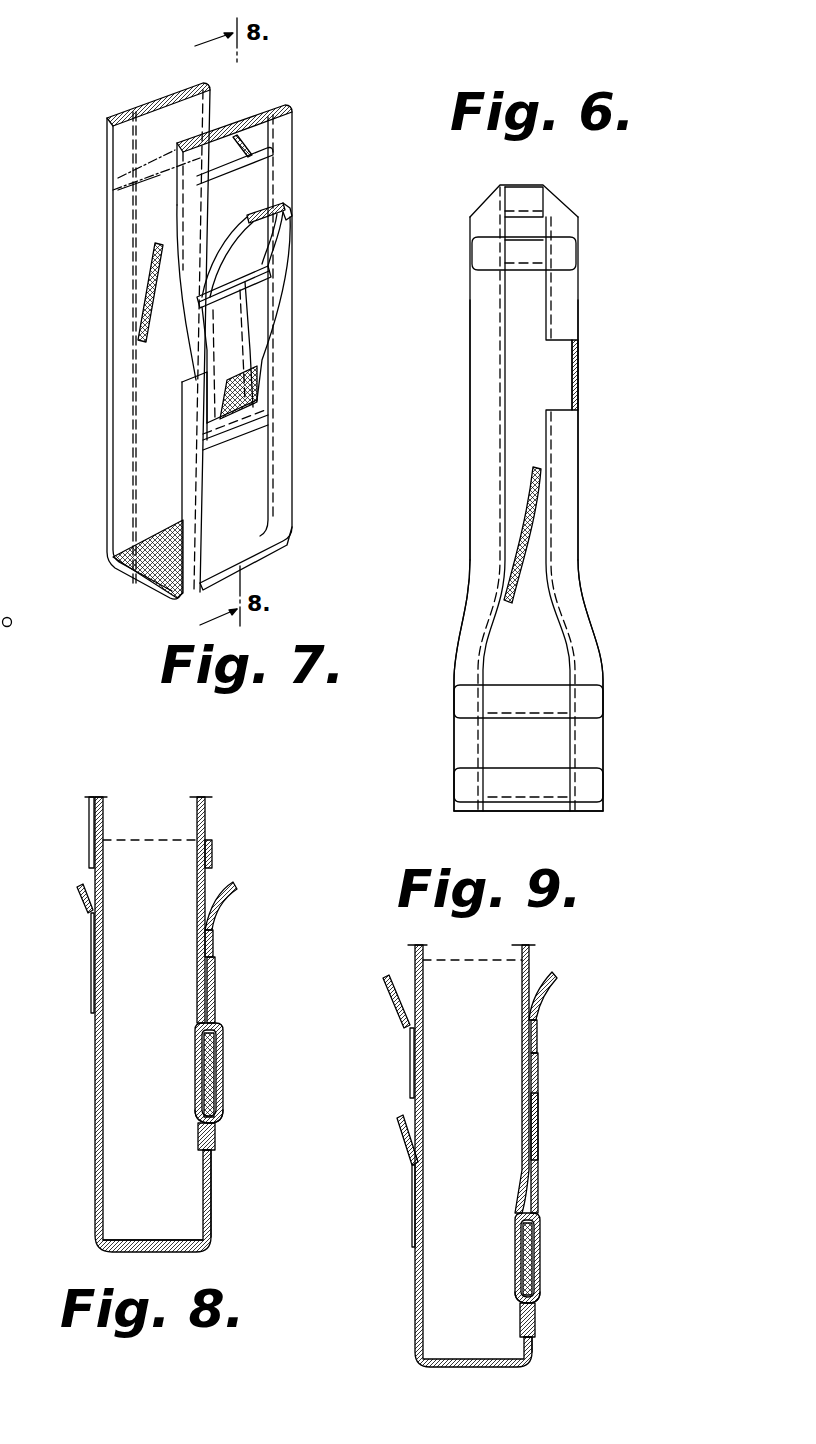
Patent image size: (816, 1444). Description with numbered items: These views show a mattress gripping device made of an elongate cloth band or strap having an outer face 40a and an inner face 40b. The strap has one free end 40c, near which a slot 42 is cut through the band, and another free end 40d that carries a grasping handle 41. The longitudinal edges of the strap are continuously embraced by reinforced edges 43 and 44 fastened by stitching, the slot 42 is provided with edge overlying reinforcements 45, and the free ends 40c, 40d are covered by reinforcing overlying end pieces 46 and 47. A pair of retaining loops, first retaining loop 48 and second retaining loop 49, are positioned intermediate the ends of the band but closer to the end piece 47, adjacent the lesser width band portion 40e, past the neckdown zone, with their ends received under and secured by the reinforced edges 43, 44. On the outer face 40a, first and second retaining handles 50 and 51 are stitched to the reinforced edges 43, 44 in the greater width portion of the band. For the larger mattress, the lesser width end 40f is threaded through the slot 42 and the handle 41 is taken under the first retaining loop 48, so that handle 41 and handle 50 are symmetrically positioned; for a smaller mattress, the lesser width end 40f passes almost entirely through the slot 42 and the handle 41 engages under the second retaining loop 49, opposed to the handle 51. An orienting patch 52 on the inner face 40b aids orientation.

In FIG. 7, the outer face 40a is at (262, 472).
In FIG. 6, the outer face 40a is at (532, 452).
In FIG. 8, the outer face 40a is at (250, 804).
In FIG. 9, the outer face 40a is at (523, 1148).
In FIG. 7, the inner face 40b is at (150, 388).
In FIG. 8, the inner face 40b is at (137, 1053).
In FIG. 9, the inner face 40b is at (436, 1139).
In FIG. 9, the free end 40c is at (538, 1234).
In FIG. 6, the free end 40d is at (538, 240).
In FIG. 7, the lesser width band portion 40e is at (196, 366).
In FIG. 6, the lesser width band portion 40e is at (462, 598).
In FIG. 7, the lesser width end 40f is at (237, 328).
In FIG. 6, the lesser width end 40f is at (470, 355).
In FIG. 8, the lesser width end 40f is at (214, 985).
In FIG. 9, the lesser width end 40f is at (538, 1080).
In FIG. 7, the grasping handle 41 is at (288, 216).
In FIG. 6, the grasping handle 41 is at (522, 192).
In FIG. 8, the grasping handle 41 is at (236, 888).
In FIG. 9, the grasping handle 41 is at (550, 985).
In FIG. 8, the slot 42 is at (200, 1120).
In FIG. 9, the slot 42 is at (520, 1302).
In FIG. 6, the reinforced edge 43 is at (473, 456).
In FIG. 6, the reinforced edge 44 is at (576, 547).
In FIG. 8, the edge overlying reinforcements 45 is at (216, 1130).
In FIG. 9, the edge overlying reinforcements 45 is at (538, 1290).
In FIG. 8, the reinforcing overlying end piece 46 is at (222, 1048).
In FIG. 9, the reinforcing overlying end piece 46 is at (533, 1214).
In FIG. 6, the reinforcing overlying end piece 47 is at (528, 258).
In FIG. 7, the first retaining loop 48 is at (258, 289).
In FIG. 6, the first retaining loop 48 is at (535, 698).
In FIG. 8, the first retaining loop 48 is at (215, 943).
In FIG. 9, the first retaining loop 48 is at (539, 1127).
In FIG. 7, the second retaining loop 49 is at (230, 186).
In FIG. 6, the second retaining loop 49 is at (535, 782).
In FIG. 8, the second retaining loop 49 is at (212, 858).
In FIG. 9, the second retaining loop 49 is at (540, 1045).
In FIG. 7, the first retaining handle 50 is at (157, 152).
In FIG. 8, the first retaining handle 50 is at (84, 910).
In FIG. 9, the first retaining handle 50 is at (400, 1134).
In FIG. 9, the second retaining handle 51 is at (395, 1000).
In FIG. 7, the orienting patch 52 is at (150, 534).
In FIG. 8, the orienting patch 52 is at (163, 1242).